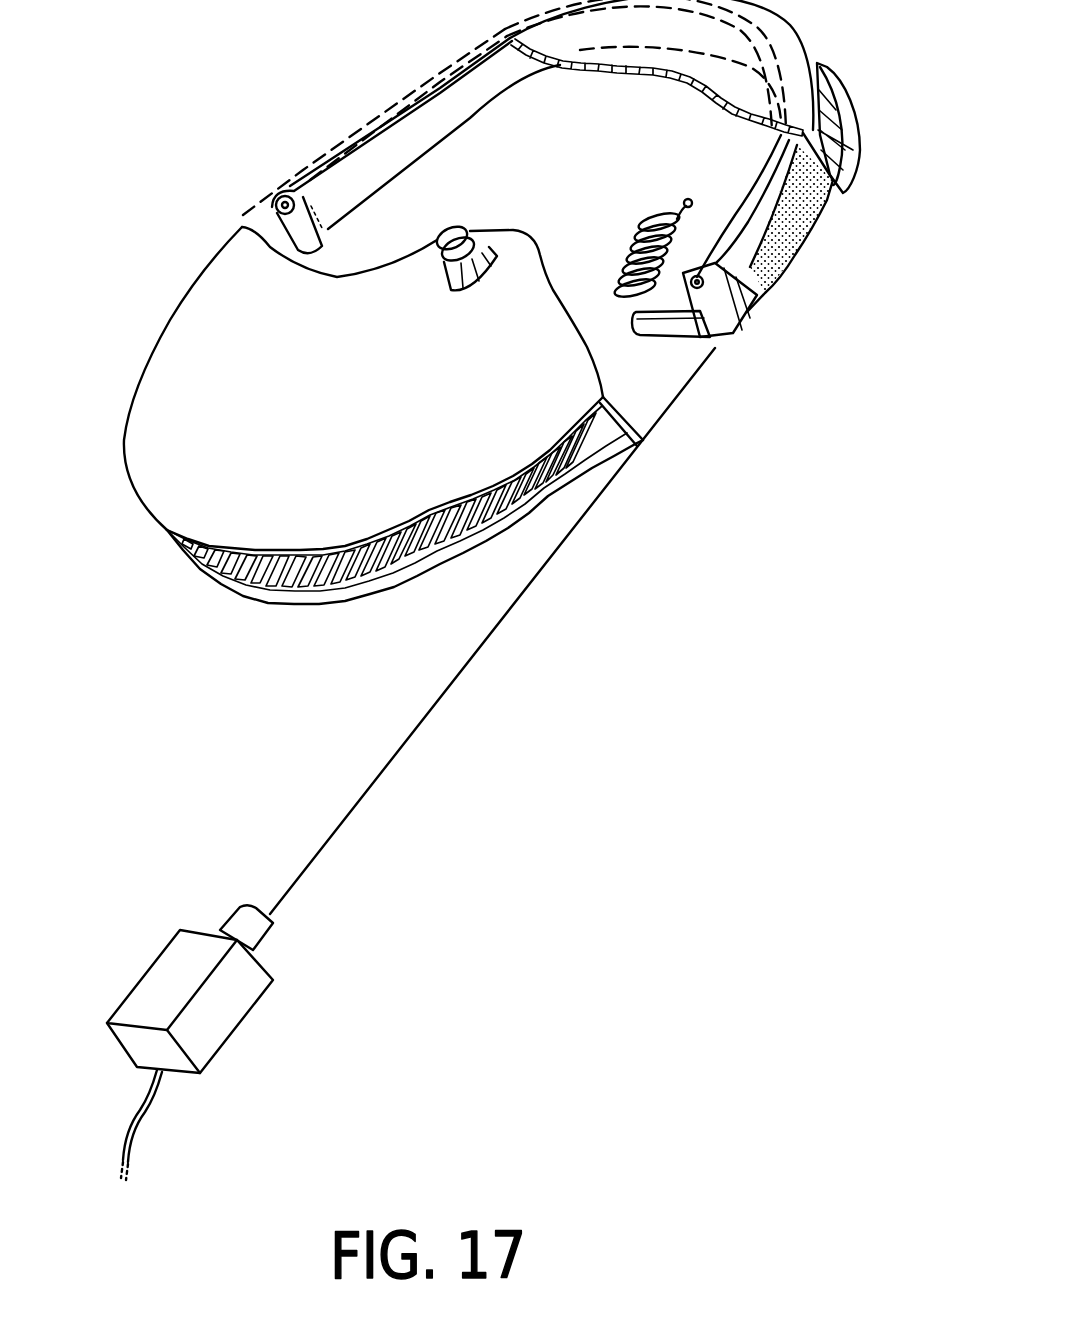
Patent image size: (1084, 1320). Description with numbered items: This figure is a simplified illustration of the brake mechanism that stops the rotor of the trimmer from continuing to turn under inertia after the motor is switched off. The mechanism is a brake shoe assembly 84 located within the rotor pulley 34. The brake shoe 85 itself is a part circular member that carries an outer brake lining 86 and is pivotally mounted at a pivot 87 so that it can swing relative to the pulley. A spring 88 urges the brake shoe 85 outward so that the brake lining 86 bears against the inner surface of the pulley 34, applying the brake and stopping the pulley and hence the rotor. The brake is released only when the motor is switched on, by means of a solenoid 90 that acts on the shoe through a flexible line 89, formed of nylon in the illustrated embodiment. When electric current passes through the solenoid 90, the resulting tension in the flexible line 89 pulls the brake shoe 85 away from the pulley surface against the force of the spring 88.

The rotor pulley 34 is at (177, 397).
The brake shoe assembly 84 is at (840, 211).
The brake shoe 85 is at (450, 103).
The brake lining 86 is at (777, 260).
The pivot mounting 87 is at (280, 200).
The spring 88 is at (622, 210).
The flexible line 89 is at (412, 737).
The solenoid 90 is at (163, 977).